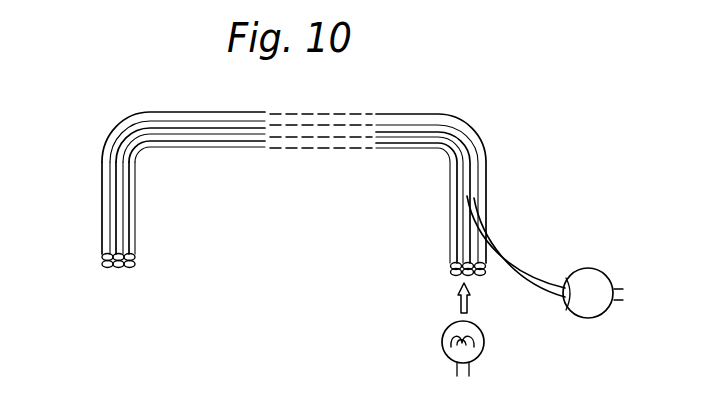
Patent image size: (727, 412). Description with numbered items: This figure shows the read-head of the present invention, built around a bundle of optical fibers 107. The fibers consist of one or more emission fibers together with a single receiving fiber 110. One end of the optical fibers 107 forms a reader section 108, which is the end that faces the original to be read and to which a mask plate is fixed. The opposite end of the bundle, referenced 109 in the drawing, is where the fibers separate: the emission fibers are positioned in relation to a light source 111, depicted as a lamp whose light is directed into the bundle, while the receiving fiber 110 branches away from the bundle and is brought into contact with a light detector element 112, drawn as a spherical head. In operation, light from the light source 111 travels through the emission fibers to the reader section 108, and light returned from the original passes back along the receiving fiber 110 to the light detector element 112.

The optical fibers 107 is at (207, 114).
The reader section 108 is at (99, 211).
The output end of tube bundle 109 is at (449, 243).
The receiving fiber 110 is at (510, 265).
The light source 111 is at (485, 335).
The light detector element 112 is at (602, 268).